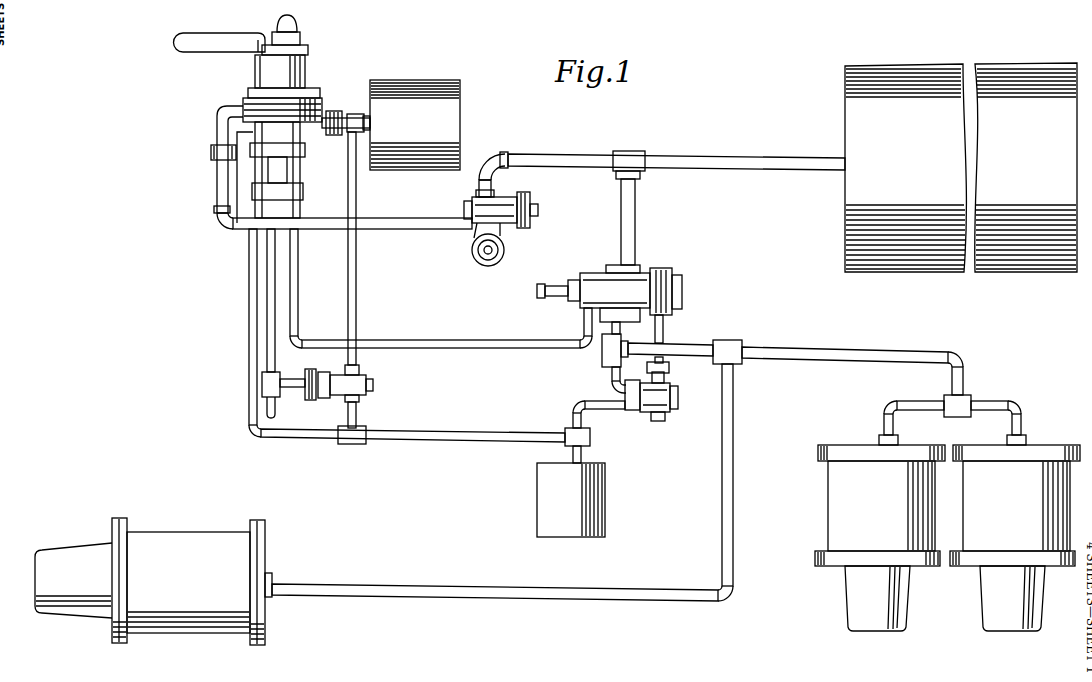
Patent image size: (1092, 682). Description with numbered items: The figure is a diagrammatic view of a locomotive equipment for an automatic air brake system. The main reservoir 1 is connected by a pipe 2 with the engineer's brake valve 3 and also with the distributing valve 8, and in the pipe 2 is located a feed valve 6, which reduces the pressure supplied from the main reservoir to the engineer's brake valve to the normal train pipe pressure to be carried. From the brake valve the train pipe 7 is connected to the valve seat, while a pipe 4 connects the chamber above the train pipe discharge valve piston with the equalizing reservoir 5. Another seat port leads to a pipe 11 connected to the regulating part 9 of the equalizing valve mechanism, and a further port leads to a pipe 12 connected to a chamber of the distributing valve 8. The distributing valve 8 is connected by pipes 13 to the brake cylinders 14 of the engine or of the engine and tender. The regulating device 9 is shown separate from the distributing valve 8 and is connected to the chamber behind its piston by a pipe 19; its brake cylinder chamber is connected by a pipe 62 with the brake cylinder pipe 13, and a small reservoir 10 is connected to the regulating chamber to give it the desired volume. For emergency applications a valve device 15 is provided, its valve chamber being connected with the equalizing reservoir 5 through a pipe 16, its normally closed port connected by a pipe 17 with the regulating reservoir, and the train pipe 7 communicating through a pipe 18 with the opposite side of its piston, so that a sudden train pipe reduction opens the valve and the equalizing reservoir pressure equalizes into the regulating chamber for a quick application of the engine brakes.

The main reservoir 1 is at (848, 110).
The pipe 2 is at (216, 194).
The engineer's brake valve 3 is at (261, 78).
The pipe 4 is at (346, 112).
The equalizing reservoir 5 is at (413, 81).
The feed valve 6 is at (476, 213).
The train pipe 7 is at (267, 281).
The distributing valve 8 is at (641, 275).
The regulating part of the equalizing valve mechanism 9 is at (673, 388).
The small reservoir 10 is at (606, 484).
The pipe 11 is at (249, 313).
The pipe 12 is at (298, 293).
The pipes 13 is at (607, 352).
The brake cylinders 14 is at (972, 497).
The valve device 15 is at (352, 385).
The pipe 16 is at (357, 255).
The pipe 17 is at (356, 407).
The pipe 18 is at (302, 389).
The pipe 19 is at (663, 333).
The pipe 62 is at (609, 385).